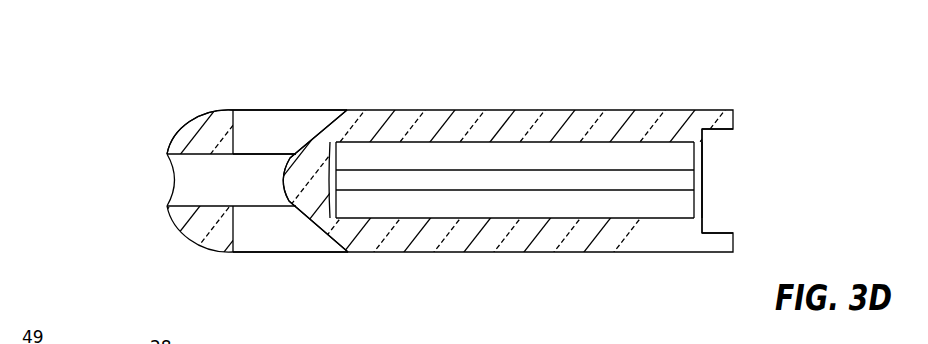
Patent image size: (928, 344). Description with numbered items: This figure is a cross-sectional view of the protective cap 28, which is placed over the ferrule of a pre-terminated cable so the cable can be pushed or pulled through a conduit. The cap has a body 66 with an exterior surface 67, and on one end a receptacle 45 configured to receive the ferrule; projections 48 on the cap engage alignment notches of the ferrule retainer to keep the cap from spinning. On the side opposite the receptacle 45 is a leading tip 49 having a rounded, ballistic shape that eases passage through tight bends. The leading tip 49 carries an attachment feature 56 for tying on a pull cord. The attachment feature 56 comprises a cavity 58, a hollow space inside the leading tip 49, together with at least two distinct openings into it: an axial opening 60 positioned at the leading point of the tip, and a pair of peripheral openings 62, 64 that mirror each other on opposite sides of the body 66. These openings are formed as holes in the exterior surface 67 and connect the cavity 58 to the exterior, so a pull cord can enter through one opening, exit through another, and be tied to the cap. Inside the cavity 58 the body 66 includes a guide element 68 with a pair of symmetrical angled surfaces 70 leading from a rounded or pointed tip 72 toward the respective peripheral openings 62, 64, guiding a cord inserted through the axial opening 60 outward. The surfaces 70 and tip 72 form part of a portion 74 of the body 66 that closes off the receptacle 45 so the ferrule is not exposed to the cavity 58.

The protective cap 28 is at (607, 70).
The receptacle 45 is at (522, 147).
The projections 48 is at (720, 232).
The leading tip 49 is at (192, 122).
The attachment feature 56 is at (167, 126).
The cavity 58 is at (257, 170).
The axial opening 60 is at (170, 178).
The peripheral opening 62 is at (288, 110).
The peripheral opening 64 is at (260, 252).
The body 66 is at (458, 110).
The exterior surface 67 is at (425, 108).
The guide element 68 is at (258, 171).
The angled surfaces 70 is at (312, 137).
The tip 72 is at (274, 192).
The portion 74 is at (318, 168).